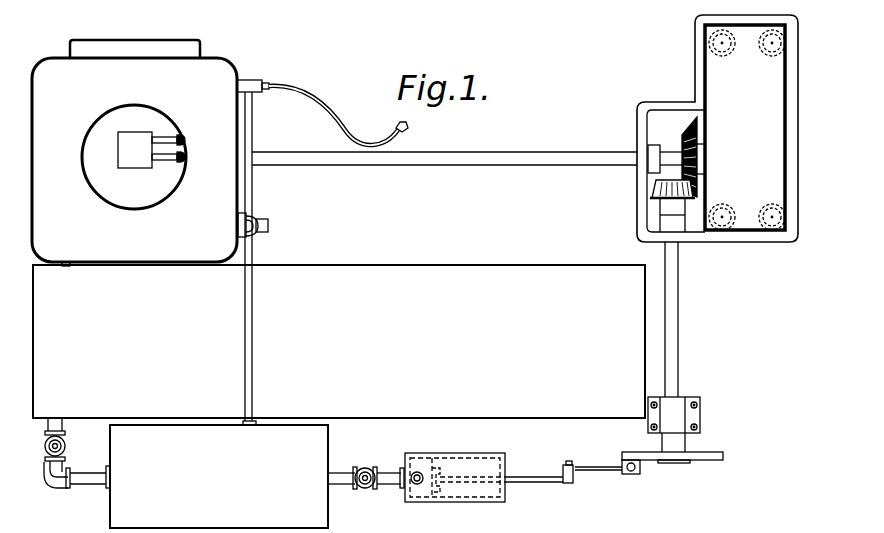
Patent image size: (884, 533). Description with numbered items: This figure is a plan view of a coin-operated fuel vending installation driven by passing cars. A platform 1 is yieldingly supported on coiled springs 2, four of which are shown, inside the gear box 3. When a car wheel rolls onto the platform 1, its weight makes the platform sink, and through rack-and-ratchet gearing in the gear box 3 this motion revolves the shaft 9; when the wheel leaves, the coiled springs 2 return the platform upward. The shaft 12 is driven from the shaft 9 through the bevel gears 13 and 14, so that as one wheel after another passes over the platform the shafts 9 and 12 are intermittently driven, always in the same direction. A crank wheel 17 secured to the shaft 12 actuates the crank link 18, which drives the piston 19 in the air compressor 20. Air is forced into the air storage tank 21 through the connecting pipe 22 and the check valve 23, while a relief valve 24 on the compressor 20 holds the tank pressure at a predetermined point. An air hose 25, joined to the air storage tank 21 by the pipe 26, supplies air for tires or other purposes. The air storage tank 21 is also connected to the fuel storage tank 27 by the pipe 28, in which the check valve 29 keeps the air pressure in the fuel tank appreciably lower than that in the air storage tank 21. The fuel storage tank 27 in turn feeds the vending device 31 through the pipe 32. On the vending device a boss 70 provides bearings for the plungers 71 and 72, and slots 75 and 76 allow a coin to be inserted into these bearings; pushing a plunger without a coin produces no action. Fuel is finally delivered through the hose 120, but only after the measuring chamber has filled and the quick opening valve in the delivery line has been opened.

The platform 1 is at (745, 127).
The coiled springs 2 is at (770, 50).
The gear box 3 is at (755, 243).
The shaft 9 is at (539, 152).
The shaft 12 is at (674, 322).
The bevel gear 13 is at (685, 130).
The bevel gear 14 is at (654, 187).
The crank wheel 17 is at (716, 459).
The crank link 18 is at (577, 466).
The piston 19 is at (435, 467).
The air compressor 20 is at (471, 490).
The air storage tank 21 is at (219, 476).
The connecting pipe 22 is at (387, 474).
The check valve 23 is at (366, 489).
The relief valve 24 is at (414, 484).
The air hose 25 is at (321, 120).
The pipe 26 is at (253, 315).
The fuel storage tank 27 is at (339, 341).
The pipe 28 is at (96, 477).
The check valve 29 is at (66, 442).
The vending device 31 is at (134, 151).
The pipe 32 is at (70, 270).
The boss 70 is at (155, 139).
The plunger 71 is at (184, 139).
The plunger 72 is at (185, 159).
The slot 75 is at (171, 138).
The slot 76 is at (173, 162).
The hose 120 is at (268, 222).